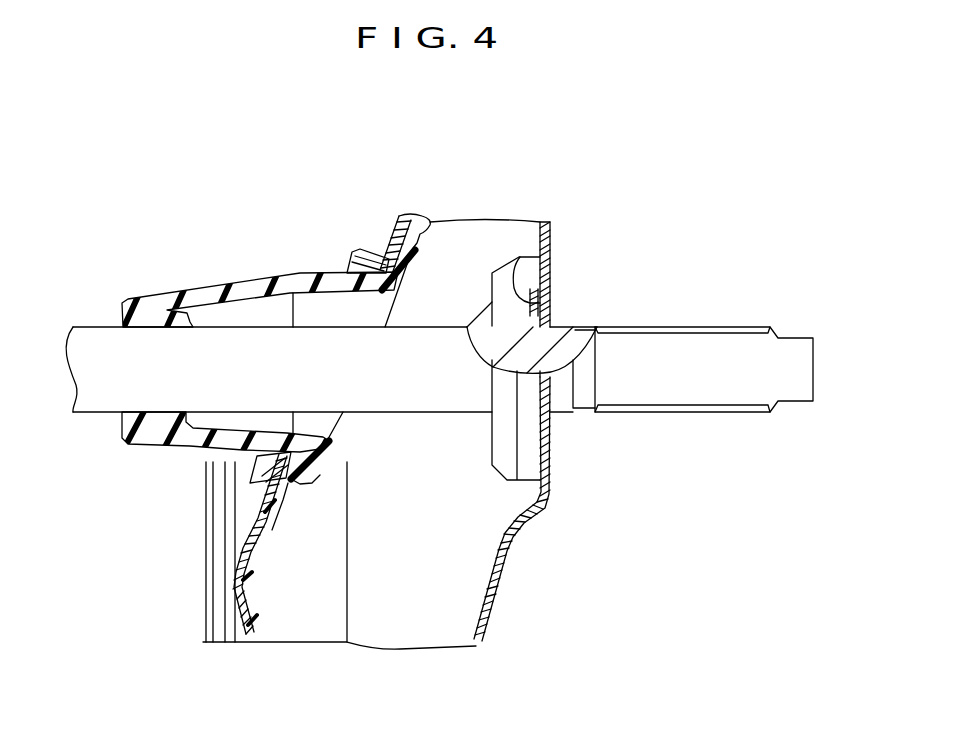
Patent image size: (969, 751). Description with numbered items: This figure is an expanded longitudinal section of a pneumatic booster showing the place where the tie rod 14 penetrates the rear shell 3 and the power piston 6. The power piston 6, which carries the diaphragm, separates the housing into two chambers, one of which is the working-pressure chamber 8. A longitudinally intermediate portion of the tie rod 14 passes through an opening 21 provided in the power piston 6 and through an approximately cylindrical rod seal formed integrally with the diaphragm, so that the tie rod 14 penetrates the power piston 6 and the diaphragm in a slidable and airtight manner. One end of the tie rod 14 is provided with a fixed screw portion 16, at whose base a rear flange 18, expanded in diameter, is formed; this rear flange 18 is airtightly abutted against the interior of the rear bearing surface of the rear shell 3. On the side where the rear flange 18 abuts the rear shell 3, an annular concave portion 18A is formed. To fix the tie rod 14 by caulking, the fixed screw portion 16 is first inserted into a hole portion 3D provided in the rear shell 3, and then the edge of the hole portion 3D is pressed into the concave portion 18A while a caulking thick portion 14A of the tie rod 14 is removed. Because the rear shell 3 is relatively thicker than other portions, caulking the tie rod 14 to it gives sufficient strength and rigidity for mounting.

The rear shell 3 is at (553, 232).
The hole portion 3D is at (563, 323).
The power piston 6 is at (245, 610).
The working-pressure chamber 8 is at (448, 623).
The tie rod 14 is at (98, 390).
The caulking thick portion 14A is at (550, 302).
The fixed screw portion 16 is at (730, 390).
The rear flange 18 is at (505, 447).
The annular concave portion 18A is at (528, 302).
The opening 21 is at (280, 617).